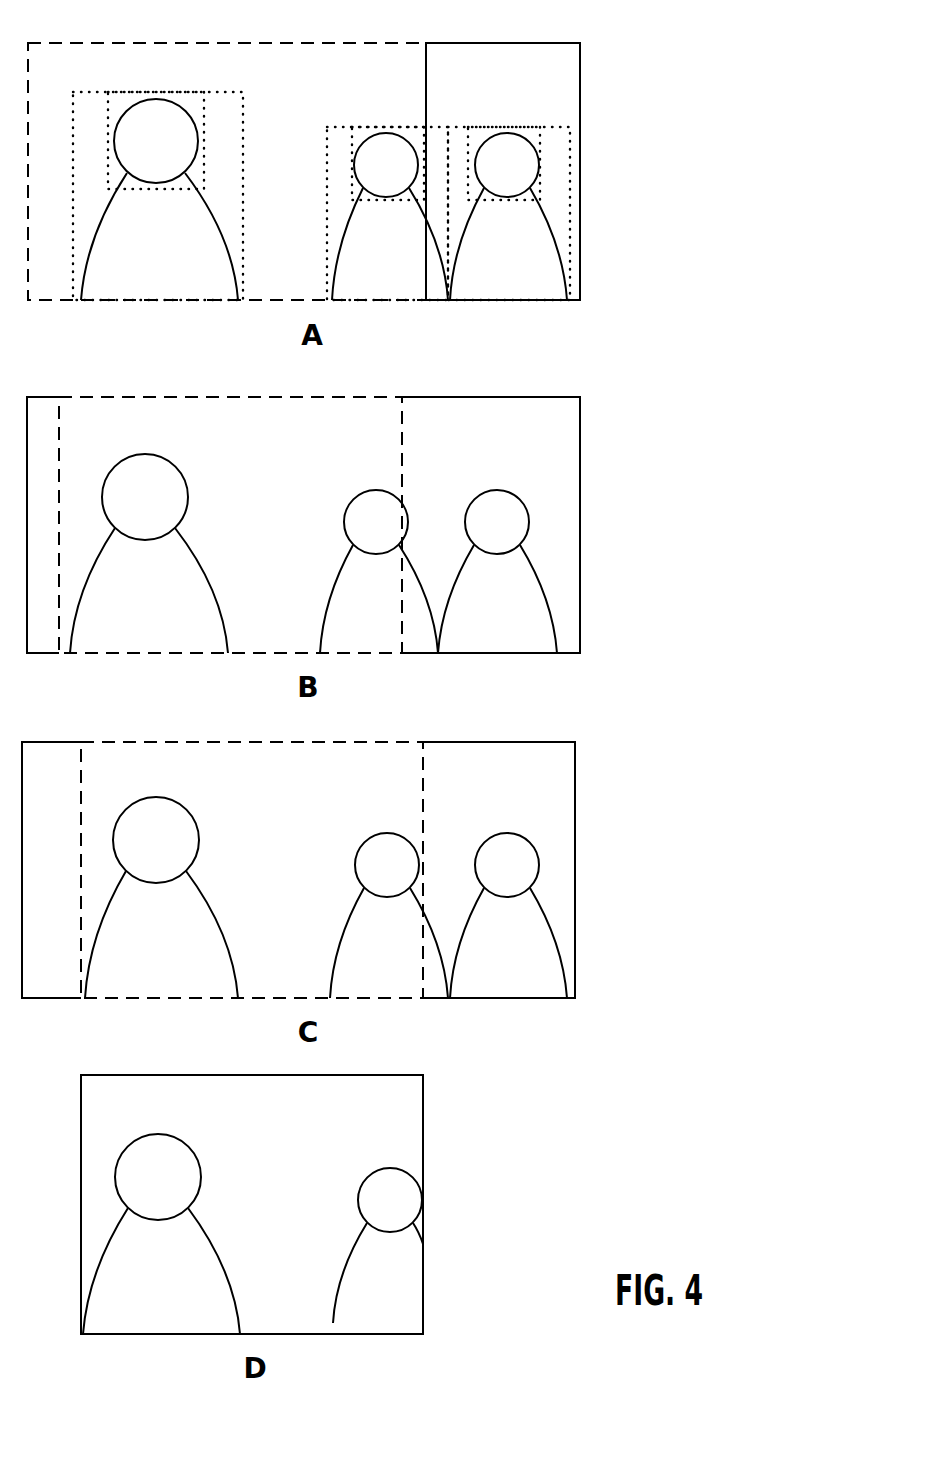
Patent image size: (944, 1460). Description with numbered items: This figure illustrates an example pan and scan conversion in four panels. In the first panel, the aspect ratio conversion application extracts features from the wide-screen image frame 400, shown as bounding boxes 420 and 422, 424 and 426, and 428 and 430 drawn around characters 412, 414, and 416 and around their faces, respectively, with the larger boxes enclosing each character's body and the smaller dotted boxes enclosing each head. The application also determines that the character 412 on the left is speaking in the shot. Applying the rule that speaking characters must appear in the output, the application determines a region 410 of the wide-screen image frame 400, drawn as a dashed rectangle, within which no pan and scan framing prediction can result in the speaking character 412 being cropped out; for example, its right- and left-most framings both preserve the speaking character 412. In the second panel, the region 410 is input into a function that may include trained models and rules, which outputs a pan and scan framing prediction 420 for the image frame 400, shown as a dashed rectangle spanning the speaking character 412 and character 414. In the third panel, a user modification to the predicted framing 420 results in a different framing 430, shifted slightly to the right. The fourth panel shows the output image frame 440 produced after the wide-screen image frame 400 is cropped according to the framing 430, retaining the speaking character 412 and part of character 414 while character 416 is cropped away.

The wide-screen image frame 400 is at (545, 43).
The region 410 is at (332, 43).
The character 412 is at (157, 98).
The character 414 is at (412, 137).
The character 416 is at (530, 137).
The bounding box / pan and scan framing prediction 420 is at (204, 110).
The bounding box 422 is at (243, 145).
The bounding box 424 is at (333, 127).
The bounding box 426 is at (372, 127).
The bounding box 428 is at (458, 127).
The framing 430 is at (500, 135).
The output image frame 440 is at (393, 1075).